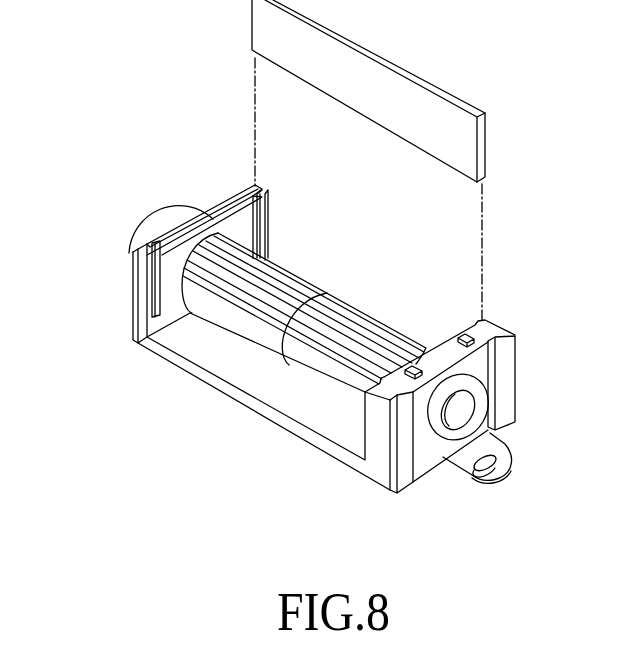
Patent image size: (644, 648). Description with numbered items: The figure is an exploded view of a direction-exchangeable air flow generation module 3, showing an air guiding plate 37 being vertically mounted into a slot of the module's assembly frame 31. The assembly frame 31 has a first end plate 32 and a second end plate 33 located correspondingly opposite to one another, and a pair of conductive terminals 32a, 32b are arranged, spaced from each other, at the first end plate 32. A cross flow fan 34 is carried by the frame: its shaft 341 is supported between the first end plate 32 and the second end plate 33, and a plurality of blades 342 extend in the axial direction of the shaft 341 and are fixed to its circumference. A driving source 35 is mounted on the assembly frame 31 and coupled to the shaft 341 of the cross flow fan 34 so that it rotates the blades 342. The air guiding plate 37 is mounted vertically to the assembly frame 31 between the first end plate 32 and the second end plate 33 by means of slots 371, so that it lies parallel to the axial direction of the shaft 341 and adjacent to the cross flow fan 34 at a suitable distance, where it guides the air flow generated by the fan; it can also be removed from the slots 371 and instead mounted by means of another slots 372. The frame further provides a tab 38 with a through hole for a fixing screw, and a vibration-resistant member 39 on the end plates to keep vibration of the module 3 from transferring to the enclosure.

The direction-exchangeable air flow generation module 3 is at (93, 335).
The assembly frame 31 is at (232, 370).
The first end plate 32 is at (492, 325).
The conductive terminal 32a is at (470, 337).
The conductive terminal 32b is at (414, 364).
The second end plate 33 is at (209, 217).
The cross flow fan 34 is at (271, 394).
The shaft 341 is at (462, 410).
The blades 342 is at (325, 372).
The driving source 35 is at (150, 230).
The air guiding plate 37 is at (272, 30).
The slots 371 is at (263, 188).
The another slots 372 is at (153, 318).
The tab 38 is at (490, 467).
The vibration-resistant member 39 is at (507, 360).